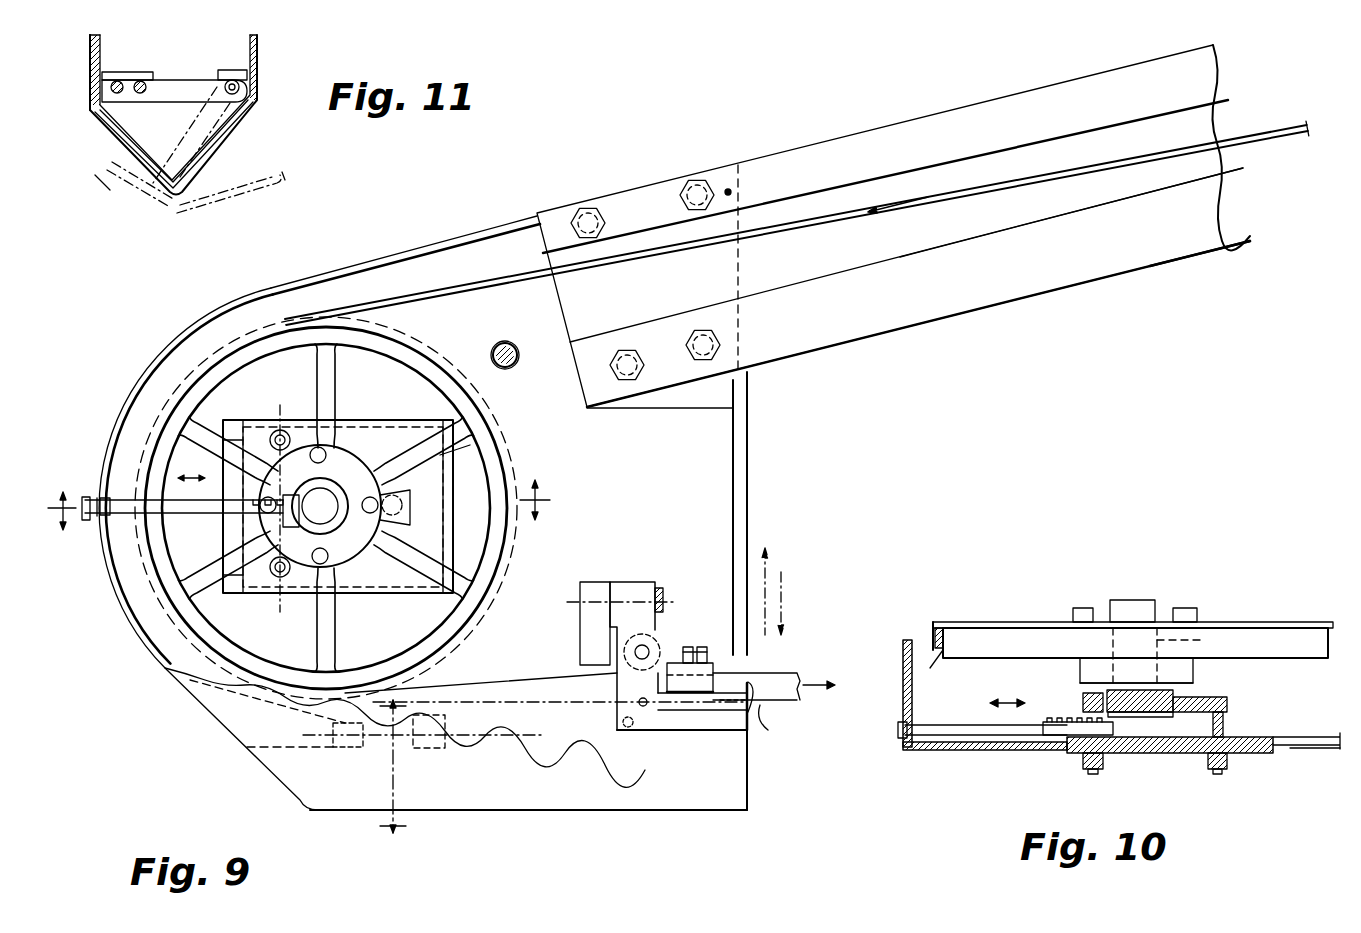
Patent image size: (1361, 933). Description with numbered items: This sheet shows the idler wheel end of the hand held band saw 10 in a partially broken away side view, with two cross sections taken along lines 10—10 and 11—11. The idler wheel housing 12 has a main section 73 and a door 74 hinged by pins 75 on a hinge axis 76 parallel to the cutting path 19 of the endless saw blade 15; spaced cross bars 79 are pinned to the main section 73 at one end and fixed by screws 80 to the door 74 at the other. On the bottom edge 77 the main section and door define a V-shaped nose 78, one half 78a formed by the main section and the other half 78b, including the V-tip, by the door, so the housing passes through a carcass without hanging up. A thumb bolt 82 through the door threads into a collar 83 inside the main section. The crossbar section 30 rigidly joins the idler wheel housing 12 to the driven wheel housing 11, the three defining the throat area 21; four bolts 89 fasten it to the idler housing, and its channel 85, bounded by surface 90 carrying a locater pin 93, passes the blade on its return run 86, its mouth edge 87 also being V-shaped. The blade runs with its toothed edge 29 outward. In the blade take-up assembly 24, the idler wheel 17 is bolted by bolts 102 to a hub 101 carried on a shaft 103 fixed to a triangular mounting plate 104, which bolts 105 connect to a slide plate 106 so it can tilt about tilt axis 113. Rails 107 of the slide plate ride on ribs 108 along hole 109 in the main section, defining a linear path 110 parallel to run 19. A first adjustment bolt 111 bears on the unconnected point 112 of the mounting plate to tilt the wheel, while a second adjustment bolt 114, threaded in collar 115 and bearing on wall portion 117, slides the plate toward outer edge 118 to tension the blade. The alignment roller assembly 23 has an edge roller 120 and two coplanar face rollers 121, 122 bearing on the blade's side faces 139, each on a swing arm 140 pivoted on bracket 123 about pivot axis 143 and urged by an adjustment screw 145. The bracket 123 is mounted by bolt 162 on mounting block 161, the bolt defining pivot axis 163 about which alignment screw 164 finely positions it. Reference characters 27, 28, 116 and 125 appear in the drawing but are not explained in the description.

In FIG. 9, the hand held band saw 10 is at (299, 493).
In FIG. 9, the driven wheel housing 11 is at (399, 774).
In FIG. 9, the idler wheel housing 12 is at (818, 500).
In FIG. 10, the idler wheel housing 12 is at (907, 769).
In FIG. 11, the idler wheel housing 12 is at (338, 43).
In FIG. 9, the endless saw blade 15 is at (870, 200).
In FIG. 10, the endless saw blade 15 is at (925, 640).
In FIG. 9, the idler wheel 17 is at (500, 575).
In FIG. 10, the idler wheel 17 is at (1020, 622).
In FIG. 9, the cutting path 19 is at (822, 690).
In FIG. 9, the throat area 21 is at (917, 400).
In FIG. 9, the alignment roller assembly 23 is at (695, 547).
In FIG. 9, the blade take-up assembly 24 is at (400, 407).
In FIG. 10, the blade take-up assembly 24 is at (1043, 807).
In FIG. 9, the upward direction arrow 27 is at (778, 577).
In FIG. 9, the downward direction arrow 28 is at (792, 617).
In FIG. 9, the saw toothed edge 29 is at (790, 735).
In FIG. 10, the saw toothed edge 29 is at (943, 664).
In FIG. 9, the crossbar section 30 is at (1120, 65).
In FIG. 9, the main section 73 is at (590, 478).
In FIG. 10, the main section 73 is at (920, 752).
In FIG. 11, the main section 73 is at (258, 50).
In FIG. 9, the door 74 is at (472, 710).
In FIG. 11, the door 74 is at (88, 48).
In FIG. 11, the pin 75 is at (250, 96).
In FIG. 9, the hinge axis 76 is at (455, 745).
In FIG. 11, the hinge axis 76 is at (240, 84).
In FIG. 9, the bottom edge 77 is at (535, 812).
In FIG. 11, the bottom edge 77 is at (300, 195).
In FIG. 9, the V-shaped nose 78 is at (648, 760).
In FIG. 11, the V-shaped nose 78 is at (244, 151).
In FIG. 11, the main section half of V-shaped nose 78a is at (242, 132).
In FIG. 11, the door half of V-shaped nose 78b is at (113, 150).
In FIG. 9, the cross links or bars 79 is at (352, 748).
In FIG. 11, the cross links or bars 79 is at (173, 98).
In FIG. 11, the screws 80 is at (140, 82).
In FIG. 9, the thumb bolt 82 is at (508, 343).
In FIG. 9, the collar 83 is at (502, 370).
In FIG. 9, the channel 85 is at (1015, 218).
In FIG. 9, the return run 86 is at (895, 216).
In FIG. 9, the mouth or bottom edge 87 is at (1130, 268).
In FIG. 9, the bolts 89 is at (607, 215).
In FIG. 9, the surface 90 is at (822, 165).
In FIG. 9, the locater pin 93 is at (733, 190).
In FIG. 10, the hub 101 is at (1073, 677).
In FIG. 9, the bolts 102 is at (330, 452).
In FIG. 10, the bolts 102 is at (1195, 608).
In FIG. 9, the shaft 103 is at (325, 506).
In FIG. 10, the shaft 103 is at (1175, 655).
In FIG. 9, the triangular mounting plate 104 is at (360, 605).
In FIG. 10, the triangular mounting plate 104 is at (1137, 670).
In FIG. 9, the bolts 105 is at (275, 425).
In FIG. 10, the bolts 105 is at (1088, 770).
In FIG. 9, the slide plate 106 is at (410, 522).
In FIG. 10, the slide plate 106 is at (1155, 755).
In FIG. 9, the rails 107 is at (420, 420).
In FIG. 9, the ribs 108 is at (445, 420).
In FIG. 10, the ribs 108 is at (1290, 750).
In FIG. 9, the hole 109 is at (445, 458).
In FIG. 10, the hole 109 is at (1307, 737).
In FIG. 9, the linear path 110 is at (200, 465).
In FIG. 10, the linear path 110 is at (1005, 685).
In FIG. 9, the first adjustment bolt 111 is at (400, 484).
In FIG. 10, the first adjustment bolt 111 is at (1225, 725).
In FIG. 9, the unconnected point 112 is at (405, 505).
In FIG. 10, the unconnected point 112 is at (1225, 697).
In FIG. 9, the tilt axis 113 is at (285, 400).
In FIG. 9, the second adjustment bolt 114 is at (215, 515).
In FIG. 10, the second adjustment bolt 114 is at (990, 737).
In FIG. 9, the collar 115 is at (275, 517).
In FIG. 10, the collar 115 is at (1082, 700).
In FIG. 9, the lock nut 116 is at (86, 522).
In FIG. 10, the lock nut 116 is at (895, 740).
In FIG. 9, the wall portion 117 is at (108, 518).
In FIG. 10, the wall portion 117 is at (913, 710).
In FIG. 9, the outer edge 118 is at (95, 465).
In FIG. 10, the outer edge 118 is at (902, 690).
In FIG. 9, the edge roller 120 is at (655, 640).
In FIG. 9, the face roller 121 is at (733, 667).
In FIG. 9, the face roller 122 is at (745, 658).
In FIG. 9, the bracket 123 is at (630, 582).
In FIG. 9, the arm 125 is at (525, 288).
In FIG. 9, the side faces 139 is at (770, 718).
In FIG. 9, the swing arm 140 is at (698, 712).
In FIG. 9, the pivot axis 143 is at (742, 760).
In FIG. 9, the adjustment screw 145 is at (646, 707).
In FIG. 9, the mounting block 161 is at (590, 582).
In FIG. 9, the bolt 162 is at (665, 590).
In FIG. 9, the pivot axis 163 is at (580, 608).
In FIG. 9, the alignment screws 164 is at (620, 728).